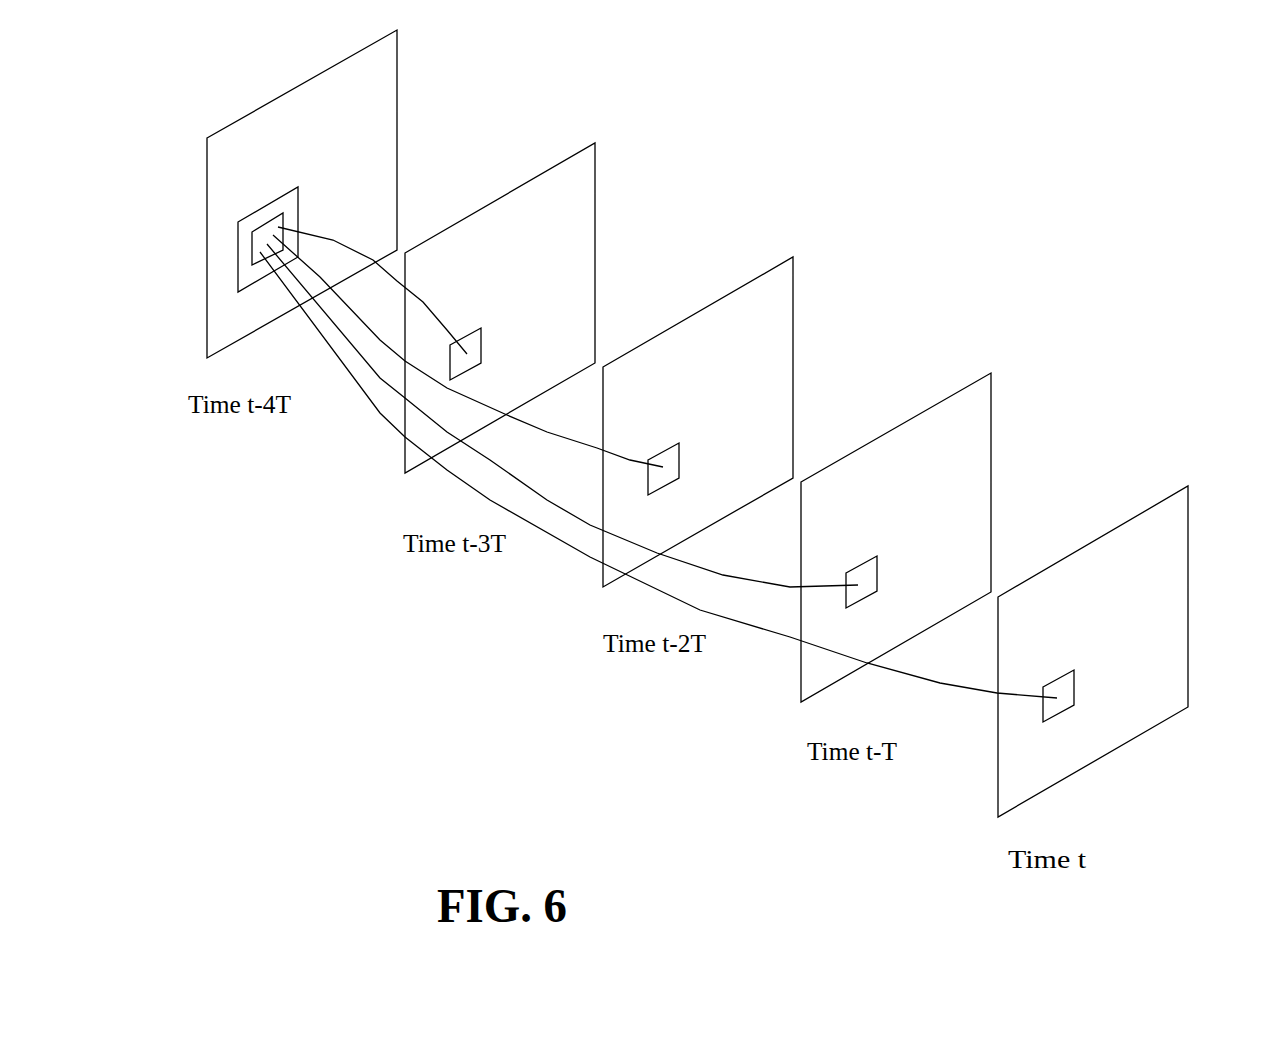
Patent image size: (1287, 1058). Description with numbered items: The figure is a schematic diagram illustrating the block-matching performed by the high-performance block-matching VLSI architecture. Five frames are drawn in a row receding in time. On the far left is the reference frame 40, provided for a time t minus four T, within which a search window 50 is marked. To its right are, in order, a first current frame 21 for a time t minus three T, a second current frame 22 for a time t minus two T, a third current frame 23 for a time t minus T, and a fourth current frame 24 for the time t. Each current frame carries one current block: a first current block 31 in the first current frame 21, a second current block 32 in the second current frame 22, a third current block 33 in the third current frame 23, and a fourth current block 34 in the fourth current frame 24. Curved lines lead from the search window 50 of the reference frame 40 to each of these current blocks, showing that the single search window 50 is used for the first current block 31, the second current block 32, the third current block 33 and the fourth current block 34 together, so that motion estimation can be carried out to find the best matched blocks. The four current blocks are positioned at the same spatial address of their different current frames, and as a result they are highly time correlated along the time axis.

The reference frame 40 is at (372, 127).
The first current frame 21 is at (572, 240).
The second current frame 22 is at (767, 355).
The third current frame 23 is at (965, 468).
The fourth current frame 24 is at (1157, 552).
The search window 50 is at (275, 208).
The first current block 31 is at (476, 335).
The second current block 32 is at (674, 447).
The third current block 33 is at (872, 558).
The fourth current block 34 is at (1063, 698).